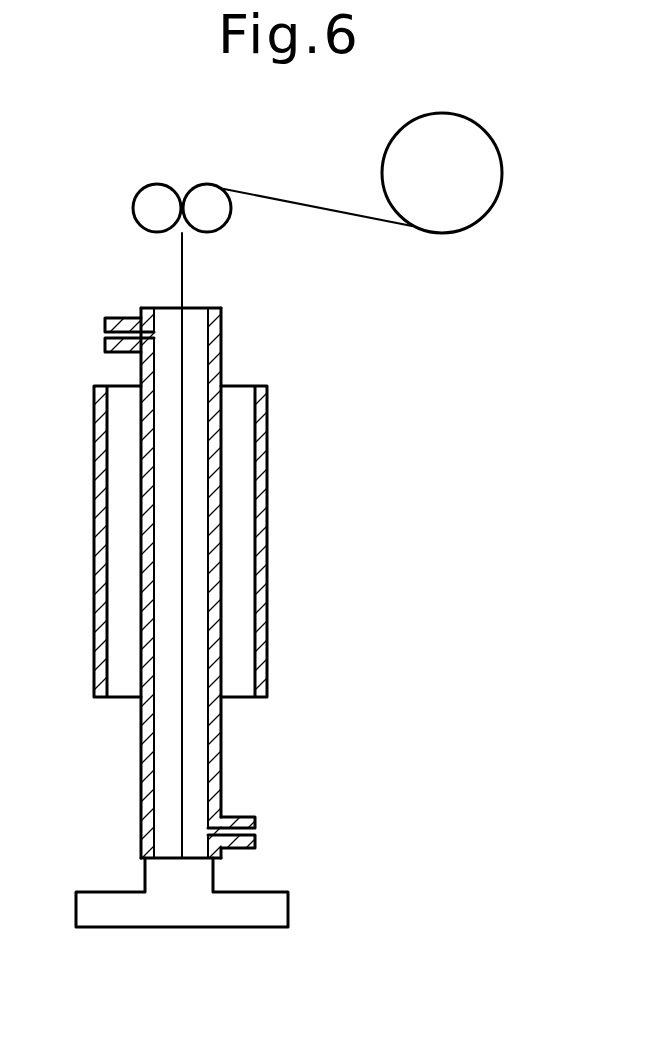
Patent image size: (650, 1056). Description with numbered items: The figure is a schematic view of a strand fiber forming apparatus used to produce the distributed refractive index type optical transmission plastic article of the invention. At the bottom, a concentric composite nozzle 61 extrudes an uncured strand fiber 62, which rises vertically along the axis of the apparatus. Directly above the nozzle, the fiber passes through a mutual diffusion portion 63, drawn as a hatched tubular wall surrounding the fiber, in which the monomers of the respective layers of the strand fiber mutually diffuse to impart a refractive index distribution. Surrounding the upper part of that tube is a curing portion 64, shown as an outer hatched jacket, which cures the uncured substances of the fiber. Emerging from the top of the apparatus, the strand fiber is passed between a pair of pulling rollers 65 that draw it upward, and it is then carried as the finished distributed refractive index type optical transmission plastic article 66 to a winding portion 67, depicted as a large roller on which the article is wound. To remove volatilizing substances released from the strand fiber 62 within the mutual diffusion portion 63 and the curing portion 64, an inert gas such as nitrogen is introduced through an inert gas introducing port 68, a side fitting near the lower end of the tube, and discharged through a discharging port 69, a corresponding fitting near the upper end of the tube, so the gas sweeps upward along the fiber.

The concentric composite nozzle 61 is at (288, 908).
The uncured strand fiber 62 is at (178, 755).
The mutual diffusion portion 63 is at (215, 775).
The curing portion 64 is at (262, 558).
The pulling rollers 65 is at (167, 197).
The distributed refractive index type optical transmission plastic article 66 is at (300, 205).
The winding portion 67 is at (482, 143).
The inert gas introducing port 68 is at (250, 828).
The discharging port 69 is at (105, 333).